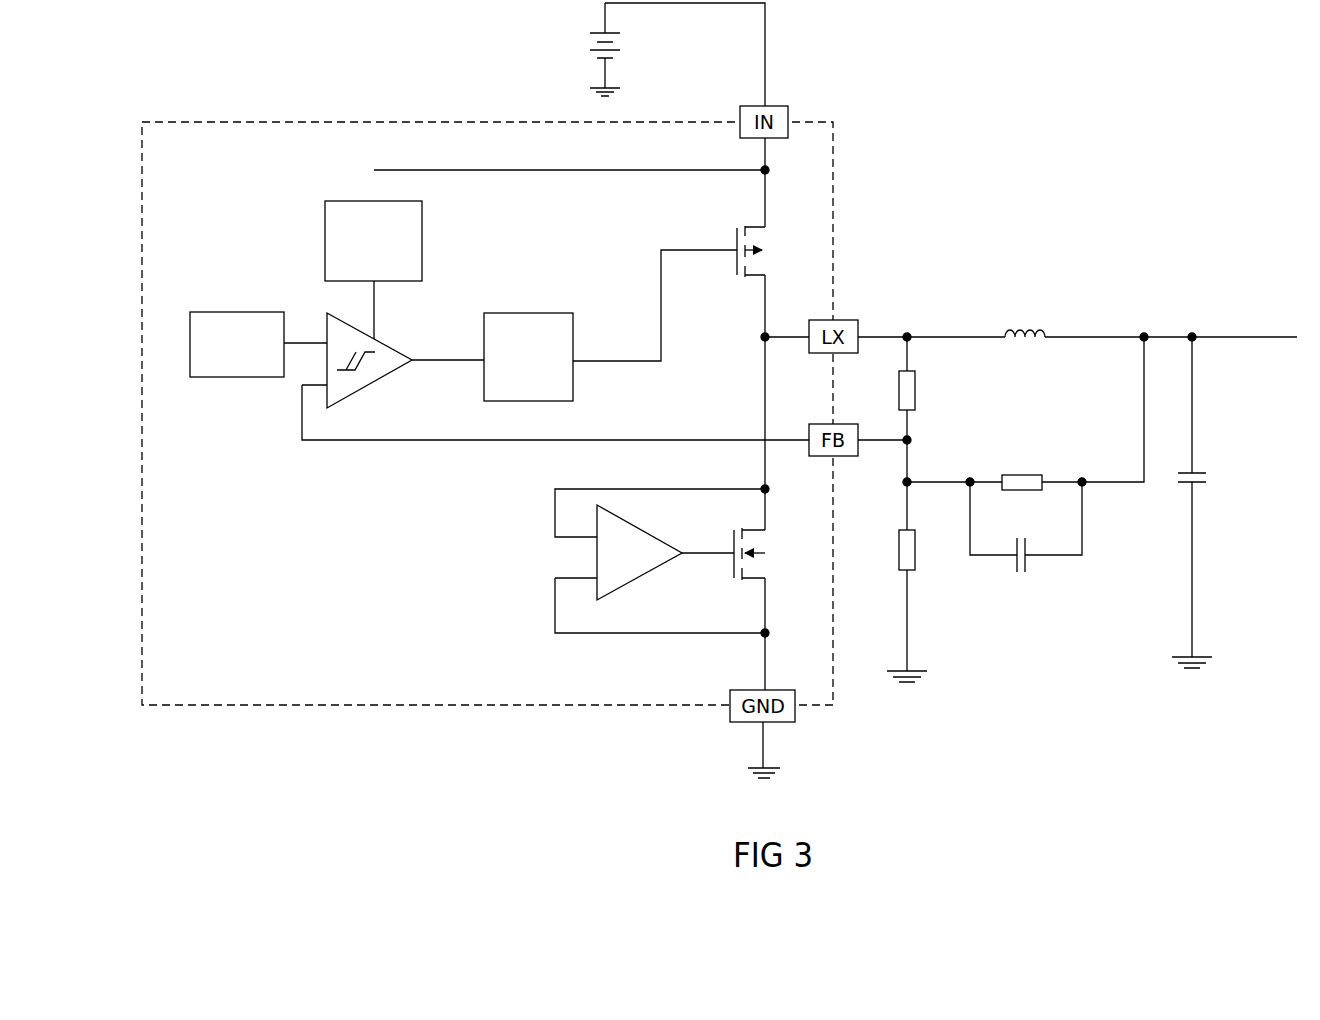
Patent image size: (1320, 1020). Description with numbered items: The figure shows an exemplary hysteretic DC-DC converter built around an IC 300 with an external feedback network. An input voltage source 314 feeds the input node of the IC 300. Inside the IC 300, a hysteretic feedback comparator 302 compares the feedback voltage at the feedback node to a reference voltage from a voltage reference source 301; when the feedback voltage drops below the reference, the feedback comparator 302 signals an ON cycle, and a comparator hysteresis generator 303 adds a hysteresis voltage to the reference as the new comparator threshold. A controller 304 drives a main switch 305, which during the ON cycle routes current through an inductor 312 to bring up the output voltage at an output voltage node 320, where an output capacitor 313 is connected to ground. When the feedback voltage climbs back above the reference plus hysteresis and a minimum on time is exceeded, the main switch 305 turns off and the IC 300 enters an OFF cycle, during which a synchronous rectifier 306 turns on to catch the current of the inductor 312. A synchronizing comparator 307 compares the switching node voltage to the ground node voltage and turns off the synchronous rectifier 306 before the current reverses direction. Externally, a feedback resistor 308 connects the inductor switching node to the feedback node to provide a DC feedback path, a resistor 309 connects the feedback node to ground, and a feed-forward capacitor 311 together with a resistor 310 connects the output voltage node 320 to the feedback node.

The IC 300 is at (487, 413).
The voltage reference source 301 is at (258, 333).
The hysteretic feedback comparator 302 is at (393, 372).
The comparator hysteresis generator 303 is at (390, 270).
The controller 304 is at (610, 325).
The main switch 305 is at (782, 260).
The synchronous rectifier 306 is at (802, 563).
The synchronizing comparator 307 is at (659, 561).
The feedback resistor 308 is at (927, 388).
The resistor 309 is at (921, 561).
The resistor 310 is at (1027, 411).
The feed-forward capacitor 311 is at (1026, 536).
The inductor 312 is at (1049, 350).
The output capacitor 313 is at (1210, 500).
The input voltage source 314 is at (617, 49).
The output voltage node 320 is at (1247, 332).